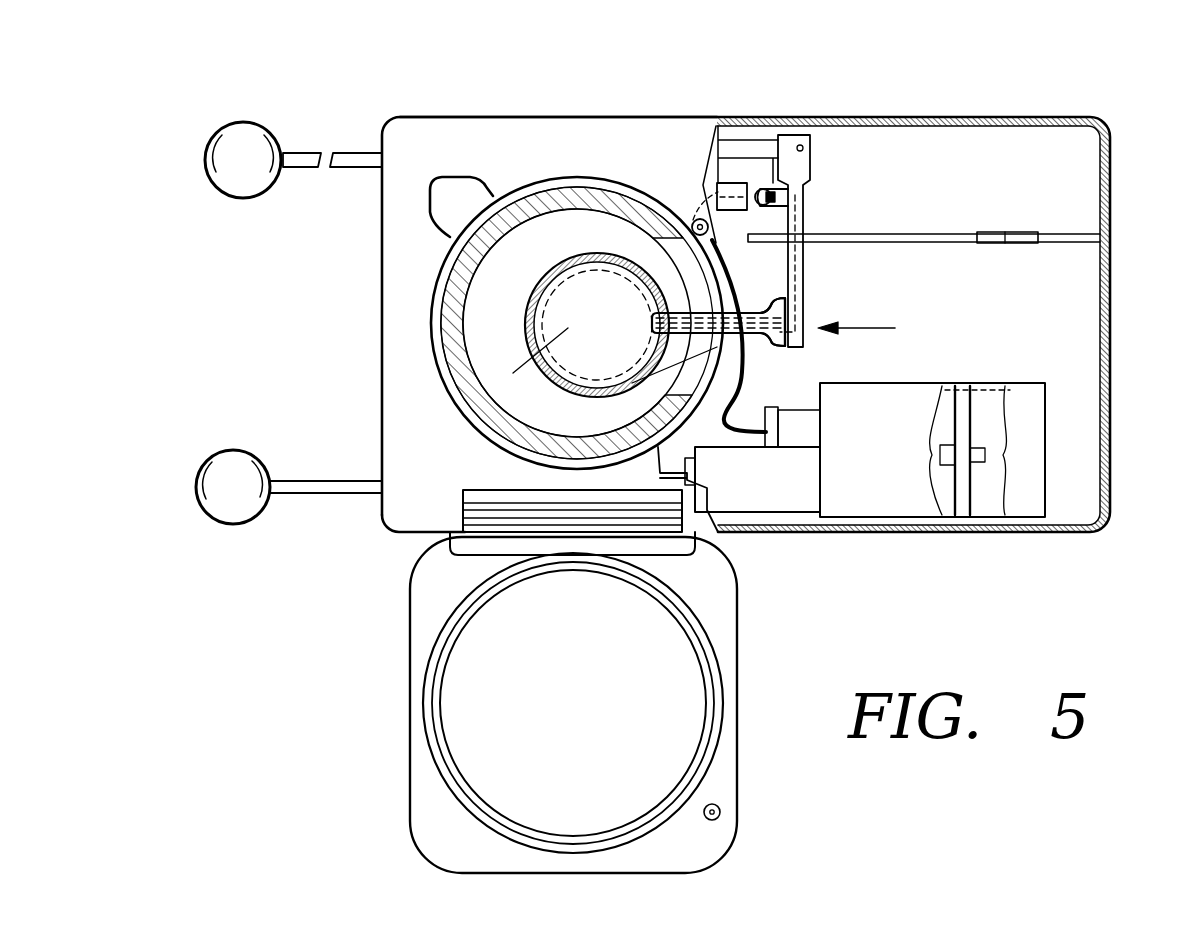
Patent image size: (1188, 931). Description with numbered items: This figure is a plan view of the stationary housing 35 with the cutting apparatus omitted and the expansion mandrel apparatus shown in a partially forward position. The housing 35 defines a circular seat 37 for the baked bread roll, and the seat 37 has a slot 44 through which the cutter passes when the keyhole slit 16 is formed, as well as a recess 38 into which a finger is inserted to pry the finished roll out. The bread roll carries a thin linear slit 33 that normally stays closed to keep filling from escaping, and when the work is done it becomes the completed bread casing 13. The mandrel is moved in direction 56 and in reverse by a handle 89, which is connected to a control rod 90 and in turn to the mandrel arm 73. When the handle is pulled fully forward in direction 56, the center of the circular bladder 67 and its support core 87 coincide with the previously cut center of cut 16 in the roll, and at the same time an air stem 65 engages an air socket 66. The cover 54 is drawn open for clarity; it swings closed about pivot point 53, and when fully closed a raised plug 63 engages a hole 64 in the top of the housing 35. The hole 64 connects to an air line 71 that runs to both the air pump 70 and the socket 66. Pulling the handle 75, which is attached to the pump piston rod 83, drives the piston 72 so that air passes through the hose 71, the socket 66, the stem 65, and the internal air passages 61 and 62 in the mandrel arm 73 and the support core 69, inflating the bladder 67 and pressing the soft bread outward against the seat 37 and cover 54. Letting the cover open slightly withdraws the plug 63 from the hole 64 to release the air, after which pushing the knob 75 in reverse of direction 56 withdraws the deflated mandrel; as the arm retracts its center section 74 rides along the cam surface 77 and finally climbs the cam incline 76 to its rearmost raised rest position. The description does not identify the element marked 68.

The bread casing 13 is at (447, 289).
The keyhole slit 16 is at (457, 331).
The slit 33 is at (660, 256).
The housing 35 is at (535, 130).
The circular seat 37 is at (443, 258).
The recess 38 is at (447, 185).
The slot 44 is at (630, 400).
The pivot point 53 is at (465, 520).
The cover 54 is at (720, 622).
The direction 56 is at (873, 328).
The internal air passage 61 is at (800, 297).
The internal air passage 62 is at (655, 330).
The raised plug 63 is at (722, 812).
The hole 64 is at (700, 220).
The air stem 65 is at (765, 190).
The air socket 66 is at (725, 185).
The circular bladder 67 is at (545, 292).
The flared end 68 is at (755, 345).
The support core 69 is at (650, 296).
The air pump 70 is at (900, 396).
The air line 71 is at (730, 450).
The piston 72 is at (955, 518).
The mandrel arm 73 is at (795, 180).
The center section 74 is at (800, 258).
The handle 75 is at (218, 468).
The cam incline 76 is at (1003, 238).
The cam surface 77 is at (898, 242).
The pump piston rod 83 is at (285, 490).
The support core 87 is at (521, 358).
The handle 89 is at (243, 137).
The control rod 90 is at (308, 160).